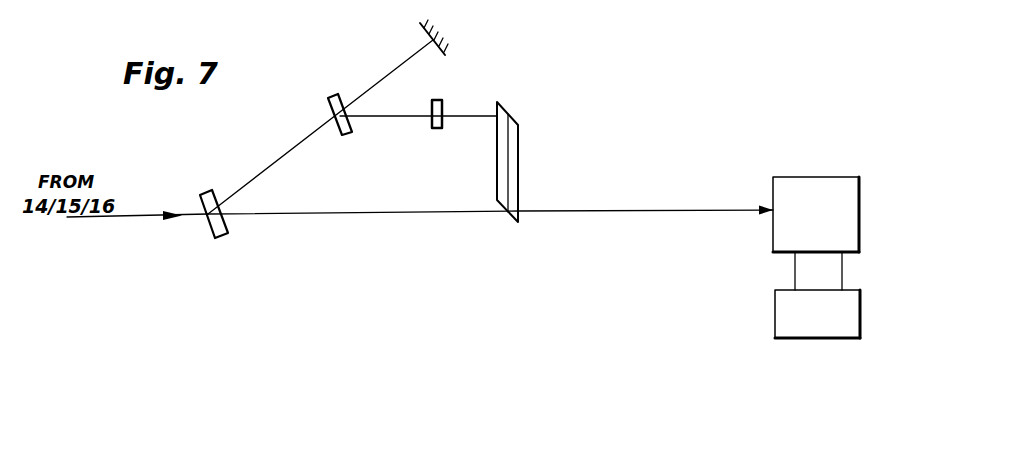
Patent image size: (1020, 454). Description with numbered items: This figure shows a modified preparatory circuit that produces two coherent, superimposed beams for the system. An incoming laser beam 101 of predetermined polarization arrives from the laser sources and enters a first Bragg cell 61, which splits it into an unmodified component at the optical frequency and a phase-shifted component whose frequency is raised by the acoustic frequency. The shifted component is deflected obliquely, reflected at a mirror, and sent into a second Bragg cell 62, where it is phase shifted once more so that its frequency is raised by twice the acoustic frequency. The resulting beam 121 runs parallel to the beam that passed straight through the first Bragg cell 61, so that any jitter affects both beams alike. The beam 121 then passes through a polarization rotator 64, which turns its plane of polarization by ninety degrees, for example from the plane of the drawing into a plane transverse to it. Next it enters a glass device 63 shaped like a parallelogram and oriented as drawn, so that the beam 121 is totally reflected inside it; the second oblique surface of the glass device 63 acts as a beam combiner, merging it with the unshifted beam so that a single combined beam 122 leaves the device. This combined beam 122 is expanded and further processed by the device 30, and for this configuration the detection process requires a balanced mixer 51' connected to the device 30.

The incoming laser beam 101 is at (118, 218).
The first Bragg cell 61 is at (225, 228).
The second Bragg cell 62 is at (343, 136).
The beam 121 is at (466, 115).
The polarization rotator 64 is at (432, 128).
The glass device 63 is at (510, 150).
The combined beam 122 is at (623, 214).
The device 30 is at (826, 190).
The balanced mixer 51' is at (842, 314).